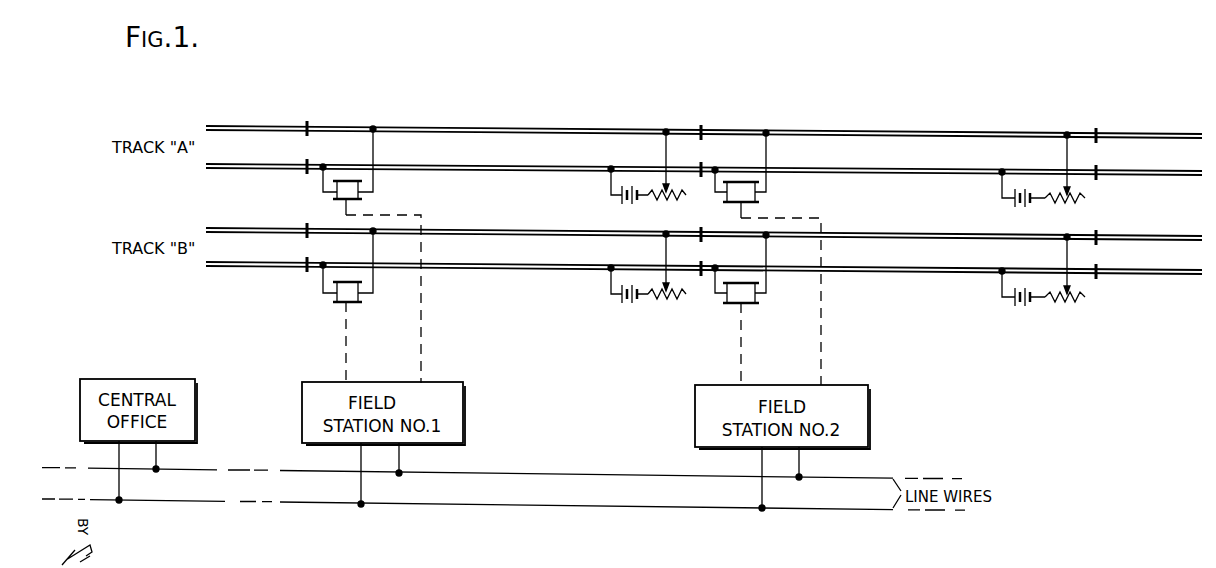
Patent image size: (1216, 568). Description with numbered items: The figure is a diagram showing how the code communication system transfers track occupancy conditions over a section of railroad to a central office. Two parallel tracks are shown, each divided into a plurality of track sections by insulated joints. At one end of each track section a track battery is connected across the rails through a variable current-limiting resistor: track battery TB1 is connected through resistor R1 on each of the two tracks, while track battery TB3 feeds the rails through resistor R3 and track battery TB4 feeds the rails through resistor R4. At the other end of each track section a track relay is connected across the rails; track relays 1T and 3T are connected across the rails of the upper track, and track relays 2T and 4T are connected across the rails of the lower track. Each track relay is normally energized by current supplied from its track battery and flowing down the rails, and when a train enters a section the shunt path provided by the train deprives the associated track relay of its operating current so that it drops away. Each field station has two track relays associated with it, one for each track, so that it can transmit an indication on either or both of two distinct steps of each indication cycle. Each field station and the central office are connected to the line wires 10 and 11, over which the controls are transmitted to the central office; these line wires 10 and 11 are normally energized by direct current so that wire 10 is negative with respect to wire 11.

The track relay 1T is at (337, 192).
The track relay 2T is at (338, 293).
The track relay 3T is at (740, 201).
The track relay 4T is at (737, 305).
The track battery TB1 is at (627, 205).
The variable current-limiting resistor R1 is at (656, 197).
The track battery TB3 is at (1022, 207).
The variable current-limiting resistor R3 is at (1060, 200).
The track battery TB4 is at (1022, 308).
The variable current-limiting resistor R4 is at (1060, 299).
The line wire 10 is at (548, 474).
The line wire 11 is at (548, 506).